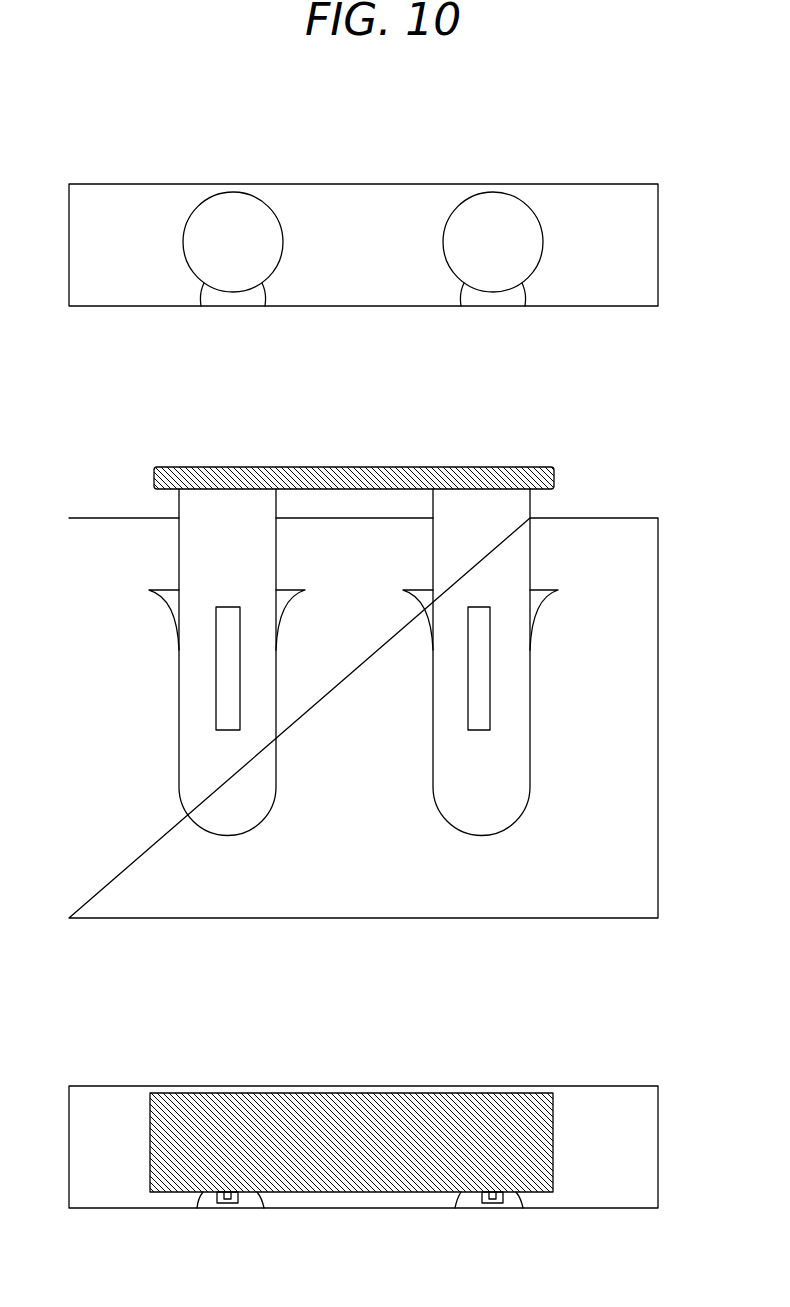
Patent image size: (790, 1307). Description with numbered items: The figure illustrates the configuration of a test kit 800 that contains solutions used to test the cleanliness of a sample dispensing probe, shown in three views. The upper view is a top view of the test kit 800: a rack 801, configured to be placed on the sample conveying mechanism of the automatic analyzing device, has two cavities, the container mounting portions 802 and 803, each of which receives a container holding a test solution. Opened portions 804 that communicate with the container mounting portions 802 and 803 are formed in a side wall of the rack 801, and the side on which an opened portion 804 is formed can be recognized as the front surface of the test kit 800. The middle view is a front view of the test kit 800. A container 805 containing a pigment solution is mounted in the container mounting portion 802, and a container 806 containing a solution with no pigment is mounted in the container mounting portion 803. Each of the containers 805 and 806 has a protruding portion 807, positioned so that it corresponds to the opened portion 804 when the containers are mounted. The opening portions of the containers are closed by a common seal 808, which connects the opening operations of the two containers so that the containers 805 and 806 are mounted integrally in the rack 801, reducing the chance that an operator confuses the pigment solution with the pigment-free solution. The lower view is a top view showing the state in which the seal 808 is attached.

The test kit 800 is at (624, 147).
The rack 801 is at (590, 297).
The container mounting portion 802 is at (495, 215).
The container mounting portion 803 is at (220, 215).
The opened portion 804 is at (497, 300).
The container 805 is at (495, 815).
The container 806 is at (240, 812).
The protruding portion 807 is at (475, 675).
The seal 808 is at (556, 479).